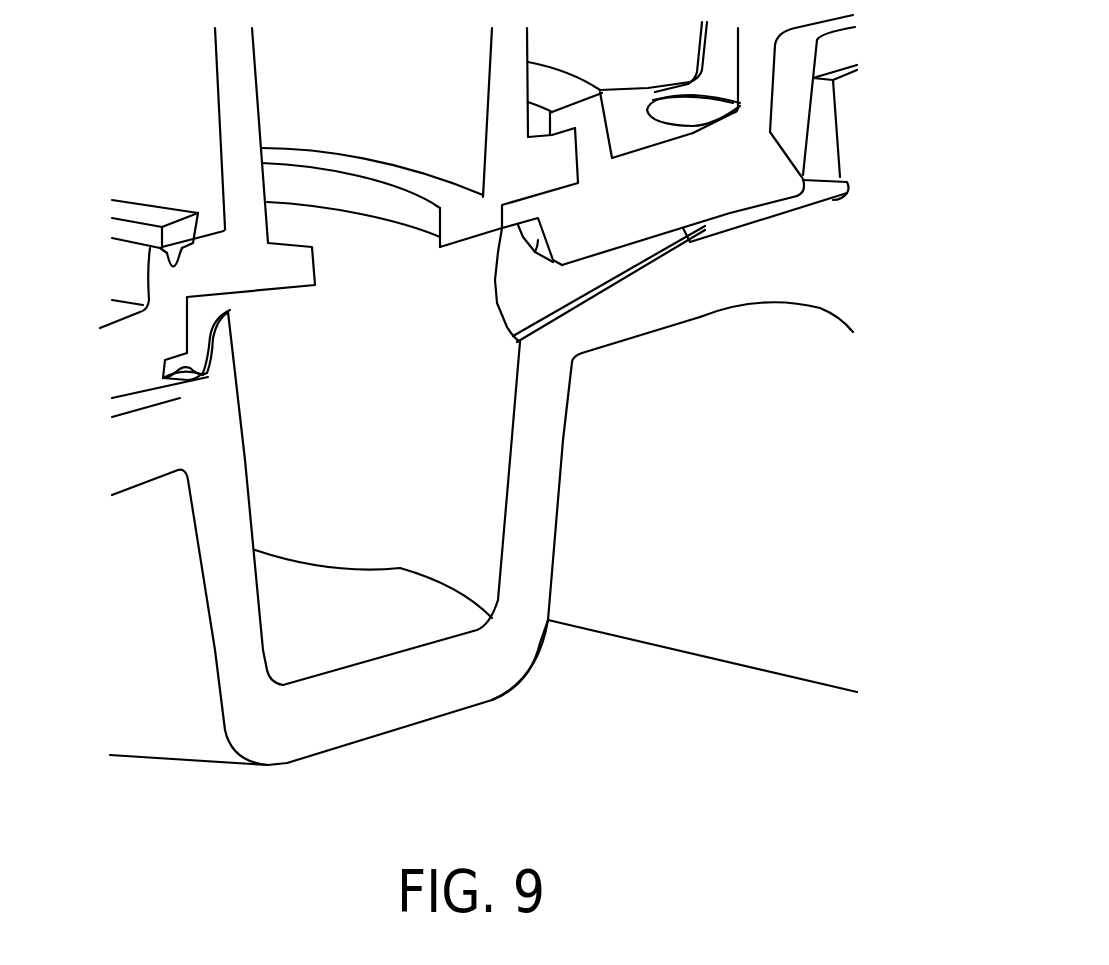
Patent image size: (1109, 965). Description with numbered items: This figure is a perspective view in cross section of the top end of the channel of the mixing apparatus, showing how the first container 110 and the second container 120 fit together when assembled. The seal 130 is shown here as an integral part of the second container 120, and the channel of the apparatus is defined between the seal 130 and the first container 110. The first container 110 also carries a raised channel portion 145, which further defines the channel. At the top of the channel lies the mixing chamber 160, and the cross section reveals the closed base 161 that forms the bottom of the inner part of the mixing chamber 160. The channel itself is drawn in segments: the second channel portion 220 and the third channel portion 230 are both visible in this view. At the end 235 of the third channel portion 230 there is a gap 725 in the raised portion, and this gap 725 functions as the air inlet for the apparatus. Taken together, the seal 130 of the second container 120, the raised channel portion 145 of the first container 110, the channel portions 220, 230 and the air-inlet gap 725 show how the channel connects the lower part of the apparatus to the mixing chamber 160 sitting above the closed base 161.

The first container 110 is at (122, 456).
The second container 120 is at (122, 357).
The seal 130 is at (718, 190).
The raised channel portion 145 is at (223, 340).
The mixing chamber 160 is at (384, 432).
The closed base 161 is at (410, 708).
The second channel portion 220 is at (807, 197).
The third channel portion 230 is at (637, 253).
The end of the third channel portion 235 is at (565, 318).
The gap 725 is at (540, 245).